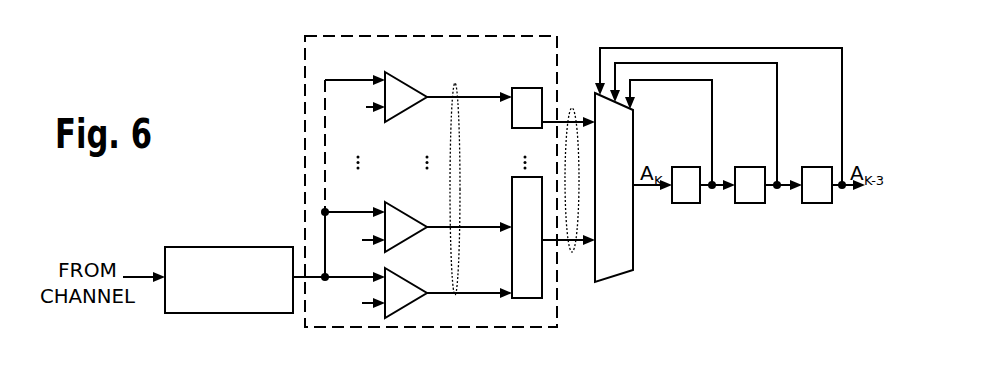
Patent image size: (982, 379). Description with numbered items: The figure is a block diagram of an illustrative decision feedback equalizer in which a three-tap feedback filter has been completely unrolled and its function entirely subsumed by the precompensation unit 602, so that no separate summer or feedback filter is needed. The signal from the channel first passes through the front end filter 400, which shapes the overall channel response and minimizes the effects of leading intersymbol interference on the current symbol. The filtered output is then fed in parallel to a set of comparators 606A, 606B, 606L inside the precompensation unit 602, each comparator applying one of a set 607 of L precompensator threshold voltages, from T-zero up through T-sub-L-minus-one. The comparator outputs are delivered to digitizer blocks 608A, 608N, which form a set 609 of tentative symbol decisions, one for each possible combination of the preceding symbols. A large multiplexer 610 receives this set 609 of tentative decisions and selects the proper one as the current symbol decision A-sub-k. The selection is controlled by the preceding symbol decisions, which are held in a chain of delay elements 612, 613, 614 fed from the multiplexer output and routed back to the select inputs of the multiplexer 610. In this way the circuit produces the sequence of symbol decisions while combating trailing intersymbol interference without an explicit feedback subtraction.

The front end filter 400 is at (222, 313).
The precompensation unit 602 is at (350, 36).
The comparator 606L is at (418, 85).
The comparator 606B is at (418, 215).
The comparator 606A is at (418, 281).
The digitizer 608N is at (512, 90).
The digitizer 608A is at (512, 177).
The set of precompensator threshold voltages 607 is at (455, 300).
The set of tentative symbol decisions 609 is at (572, 252).
The multiplexer 610 is at (635, 115).
The delay element 612 is at (678, 203).
The delay element 613 is at (743, 203).
The delay element 614 is at (808, 203).